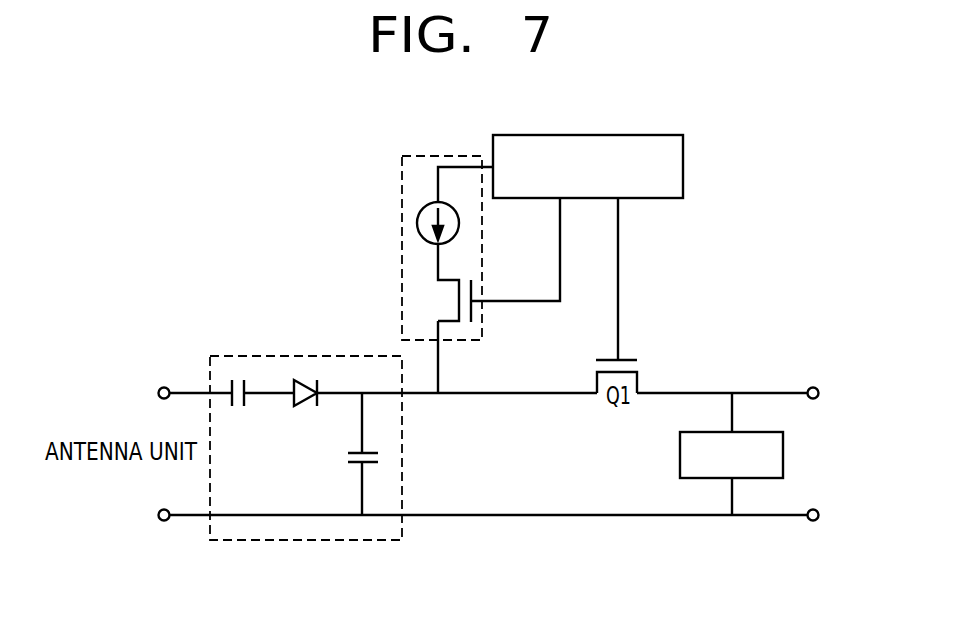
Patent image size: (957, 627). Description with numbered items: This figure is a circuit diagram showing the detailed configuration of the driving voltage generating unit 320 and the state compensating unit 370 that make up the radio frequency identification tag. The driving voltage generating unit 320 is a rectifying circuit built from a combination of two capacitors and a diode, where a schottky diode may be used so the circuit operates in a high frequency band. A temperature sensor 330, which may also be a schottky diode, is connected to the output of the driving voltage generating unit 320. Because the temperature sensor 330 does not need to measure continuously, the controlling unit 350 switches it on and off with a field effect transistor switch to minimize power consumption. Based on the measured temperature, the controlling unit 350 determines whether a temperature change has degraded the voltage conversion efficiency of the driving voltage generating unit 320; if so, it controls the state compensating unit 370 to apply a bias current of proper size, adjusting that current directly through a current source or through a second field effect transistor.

The driving voltage generating unit 320 is at (295, 356).
The temperature sensor 330 is at (783, 449).
The controlling unit 350 is at (683, 163).
The state compensating unit 370 is at (430, 156).